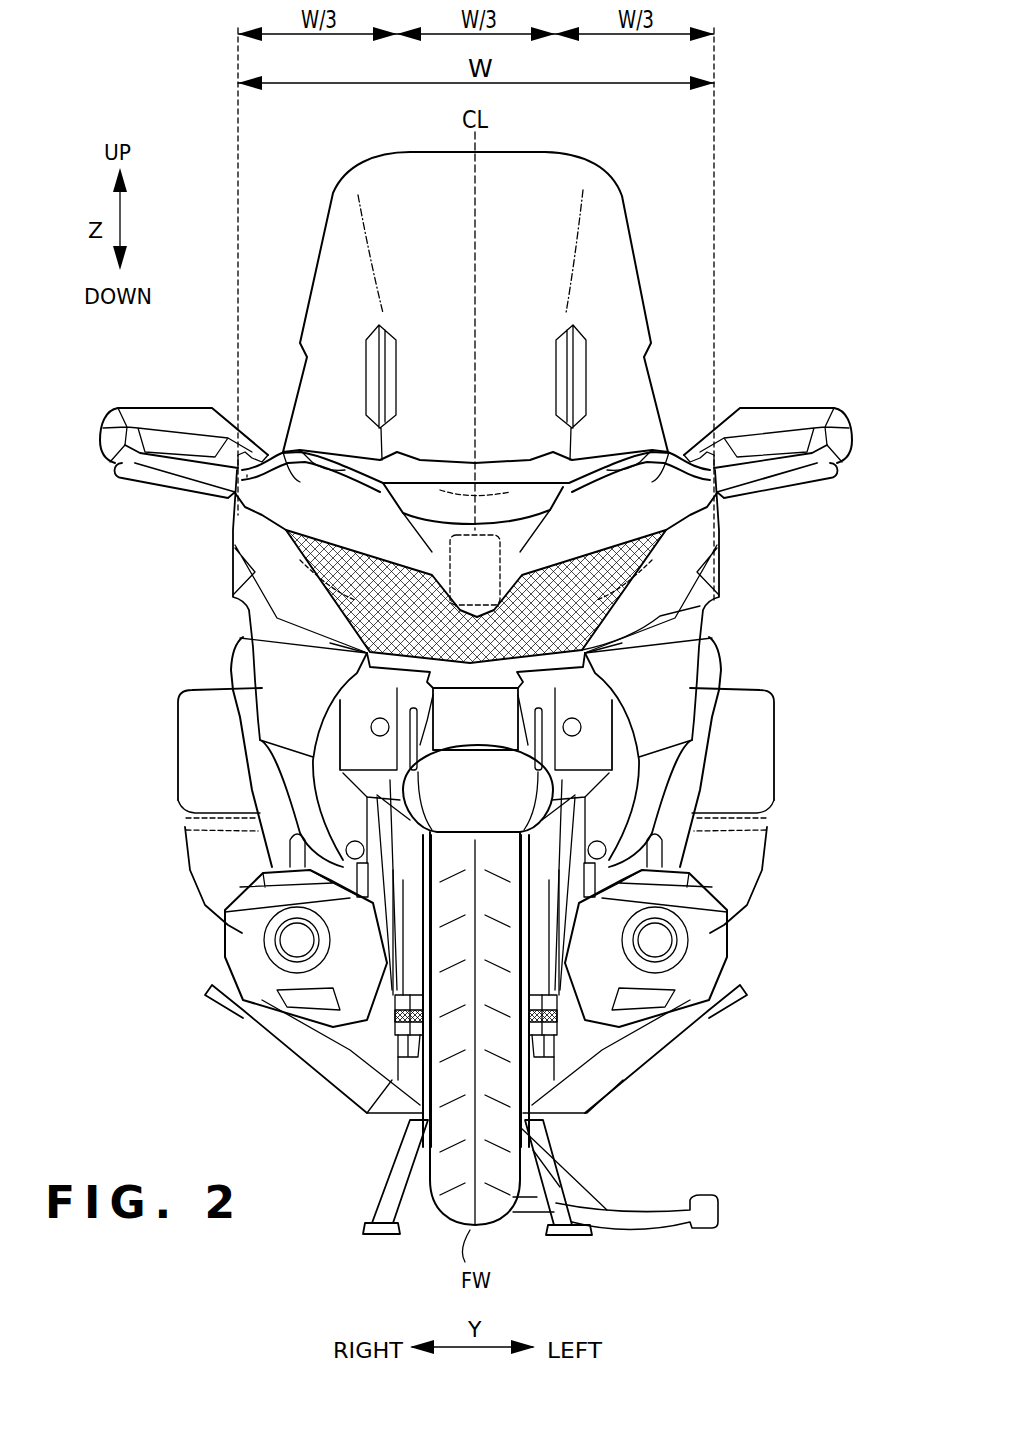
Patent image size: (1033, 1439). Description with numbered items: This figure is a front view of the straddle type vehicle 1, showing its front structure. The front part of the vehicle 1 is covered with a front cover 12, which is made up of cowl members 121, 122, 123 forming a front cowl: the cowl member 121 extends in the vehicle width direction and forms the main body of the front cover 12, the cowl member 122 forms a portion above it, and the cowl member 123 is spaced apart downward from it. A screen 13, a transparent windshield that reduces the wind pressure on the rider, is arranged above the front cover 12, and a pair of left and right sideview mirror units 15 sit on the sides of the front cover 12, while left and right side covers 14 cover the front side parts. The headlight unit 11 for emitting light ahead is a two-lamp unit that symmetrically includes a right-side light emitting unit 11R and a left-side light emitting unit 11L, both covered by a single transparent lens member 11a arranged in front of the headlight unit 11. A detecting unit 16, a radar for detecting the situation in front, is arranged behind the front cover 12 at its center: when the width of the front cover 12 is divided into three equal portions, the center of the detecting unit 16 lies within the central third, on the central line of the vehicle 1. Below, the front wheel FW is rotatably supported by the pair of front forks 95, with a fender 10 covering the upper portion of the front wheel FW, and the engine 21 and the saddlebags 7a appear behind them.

The straddle type vehicle 1 is at (748, 278).
The screen 13 is at (640, 240).
The front cover 12 is at (242, 517).
The cowl member 122 is at (507, 503).
The cowl member 121 is at (657, 463).
The detecting unit 16 is at (457, 520).
The headlight unit 11 is at (676, 536).
The right-side light emitting unit 11R is at (338, 578).
The left-side light emitting unit 11L is at (596, 578).
The sideview mirror unit 15 is at (160, 405).
The side cover 14 is at (233, 590).
The lens member 11a is at (660, 616).
The cowl member 123 is at (240, 637).
The saddlebag 7a is at (178, 772).
The fender 10 is at (556, 800).
The engine 21 is at (222, 940).
The front wheel FW is at (476, 1028).
The front fork 95 is at (395, 1058).